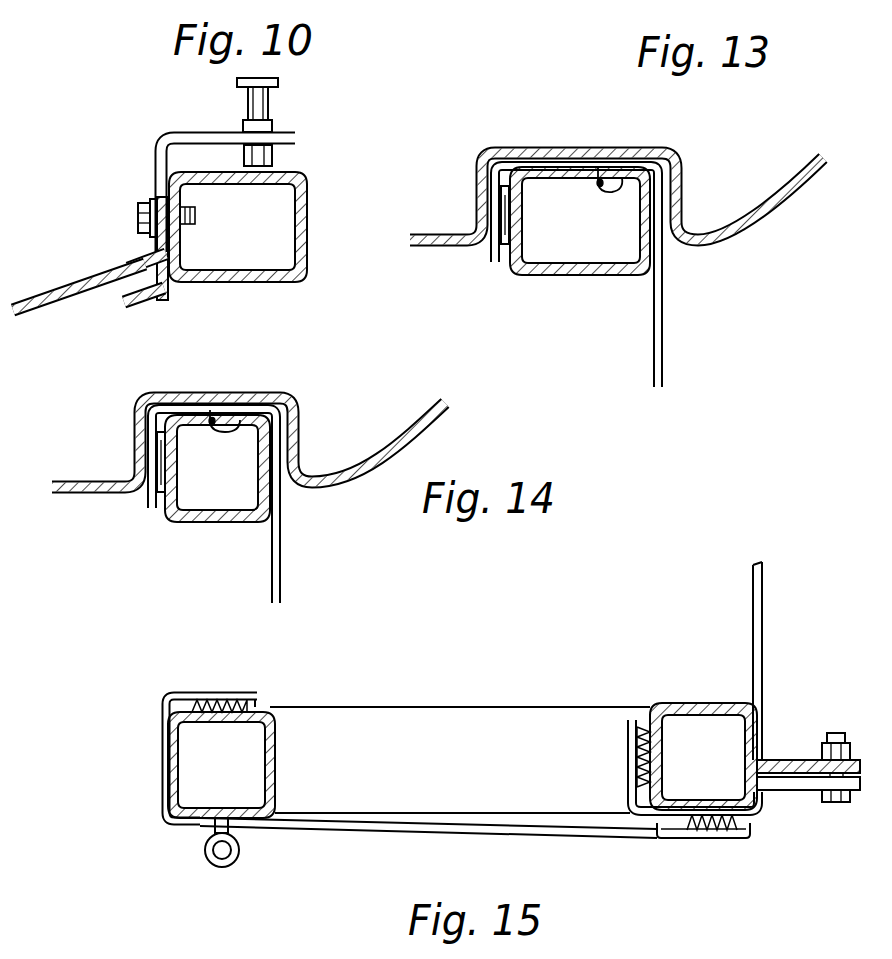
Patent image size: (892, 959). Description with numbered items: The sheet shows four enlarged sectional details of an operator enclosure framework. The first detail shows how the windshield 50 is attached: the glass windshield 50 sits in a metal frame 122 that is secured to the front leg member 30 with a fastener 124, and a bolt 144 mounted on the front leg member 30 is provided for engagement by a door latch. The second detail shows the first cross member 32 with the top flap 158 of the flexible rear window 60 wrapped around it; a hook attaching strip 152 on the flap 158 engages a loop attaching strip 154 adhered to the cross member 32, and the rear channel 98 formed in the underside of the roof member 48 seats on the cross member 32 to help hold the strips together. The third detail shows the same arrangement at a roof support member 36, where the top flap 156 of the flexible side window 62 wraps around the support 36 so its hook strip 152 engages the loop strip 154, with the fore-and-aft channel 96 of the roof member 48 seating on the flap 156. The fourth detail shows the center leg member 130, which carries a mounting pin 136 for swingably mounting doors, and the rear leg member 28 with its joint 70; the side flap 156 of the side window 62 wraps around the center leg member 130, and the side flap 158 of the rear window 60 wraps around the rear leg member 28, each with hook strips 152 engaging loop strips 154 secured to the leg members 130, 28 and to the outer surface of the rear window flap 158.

In FIG. 10, the bolt 144 is at (269, 103).
In FIG. 10, the front leg member 30 is at (309, 190).
In FIG. 10, the fastener 124 is at (138, 217).
In FIG. 10, the metal frame 122 is at (150, 313).
In FIG. 10, the windshield 50 is at (47, 288).
In FIG. 13, the roof member 48 is at (431, 252).
In FIG. 14, the roof member 48 is at (67, 499).
In FIG. 13, the flexible rear window 60 is at (666, 336).
In FIG. 15, the flexible rear window 60 is at (767, 630).
In FIG. 13, the flap of rear window 158 is at (492, 186).
In FIG. 15, the flap of rear window 158 is at (630, 720).
In FIG. 13, the hook attaching strip 152 is at (502, 236).
In FIG. 14, the hook attaching strip 152 is at (158, 482).
In FIG. 15, the hook attaching strip 152 is at (237, 700).
In FIG. 13, the loop attaching strip 154 is at (509, 205).
In FIG. 14, the loop attaching strip 154 is at (165, 456).
In FIG. 15, the loop attaching strip 154 is at (228, 710).
In FIG. 13, the first cross member 32 is at (603, 276).
In FIG. 13, the rear channel 98 is at (628, 150).
In FIG. 14, the flexible side window 62 is at (287, 560).
In FIG. 15, the flexible side window 62 is at (430, 841).
In FIG. 14, the flap of side window 156 is at (157, 410).
In FIG. 15, the flap of side window 156 is at (190, 693).
In FIG. 14, the roof support member 36 is at (213, 523).
In FIG. 14, the fore-and-aft channel 96 is at (243, 416).
In FIG. 15, the center leg member 130 is at (276, 770).
In FIG. 15, the mounting pin 136 is at (222, 868).
In FIG. 15, the rear leg member 28 is at (708, 703).
In FIG. 15, the joint 70 is at (860, 806).